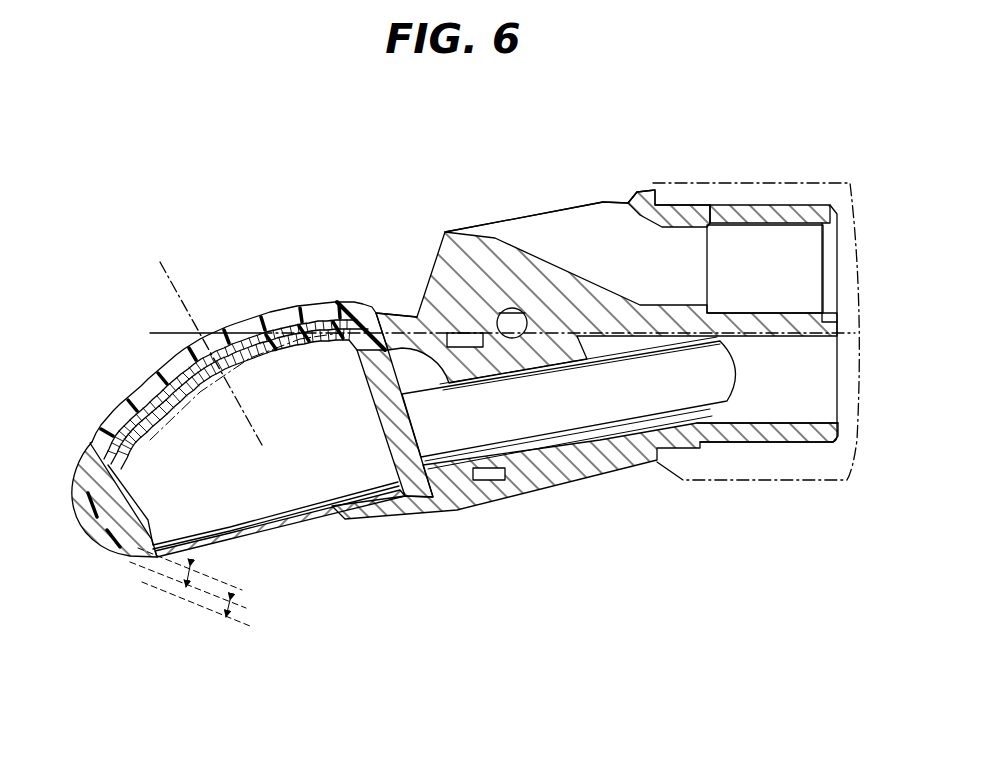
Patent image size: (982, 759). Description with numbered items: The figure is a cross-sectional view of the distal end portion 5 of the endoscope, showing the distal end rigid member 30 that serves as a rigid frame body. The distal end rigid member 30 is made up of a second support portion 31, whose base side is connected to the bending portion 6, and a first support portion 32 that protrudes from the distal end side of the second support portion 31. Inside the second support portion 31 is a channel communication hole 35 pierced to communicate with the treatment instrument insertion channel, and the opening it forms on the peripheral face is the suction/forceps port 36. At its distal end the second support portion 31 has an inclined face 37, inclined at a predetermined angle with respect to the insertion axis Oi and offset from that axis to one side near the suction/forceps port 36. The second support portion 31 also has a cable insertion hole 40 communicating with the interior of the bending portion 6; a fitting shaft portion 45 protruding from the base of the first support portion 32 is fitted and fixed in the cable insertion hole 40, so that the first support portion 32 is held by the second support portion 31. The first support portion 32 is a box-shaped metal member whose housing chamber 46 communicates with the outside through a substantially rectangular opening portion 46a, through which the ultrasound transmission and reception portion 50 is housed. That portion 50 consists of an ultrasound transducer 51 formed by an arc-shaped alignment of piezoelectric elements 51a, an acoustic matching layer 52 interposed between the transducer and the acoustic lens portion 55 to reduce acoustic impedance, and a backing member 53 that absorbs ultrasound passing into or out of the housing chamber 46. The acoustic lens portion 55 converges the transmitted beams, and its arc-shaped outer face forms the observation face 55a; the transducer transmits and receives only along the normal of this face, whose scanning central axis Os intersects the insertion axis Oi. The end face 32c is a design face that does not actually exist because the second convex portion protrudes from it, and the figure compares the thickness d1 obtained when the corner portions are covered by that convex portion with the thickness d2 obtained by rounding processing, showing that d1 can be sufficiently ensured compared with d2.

The distal end portion 5 is at (474, 197).
The bending portion 6 is at (757, 183).
The distal end rigid member 30 is at (247, 684).
The second support portion 31 is at (456, 649).
The first support portion 32 is at (80, 649).
The end face 32c is at (123, 495).
The channel communication hole 35 is at (691, 219).
The suction/forceps port 36 is at (606, 237).
The inclined face 37 is at (430, 277).
The cable insertion hole 40 is at (745, 412).
The fitting shaft portion 45 is at (527, 458).
The housing chamber 46 is at (400, 497).
The opening portion 46a is at (353, 302).
The ultrasound transmission and reception portion 50 is at (238, 338).
The ultrasound transducer 51 is at (255, 330).
The piezoelectric elements 51a is at (305, 309).
The acoustic matching layer 52 is at (287, 327).
The backing member 53 is at (218, 330).
The acoustic lens portion 55 is at (206, 381).
The observation face 55a is at (127, 405).
The scanning central axis Os is at (160, 262).
The insertion axis Oi is at (170, 333).
The thickness d1 is at (230, 612).
The thickness d2 is at (188, 600).